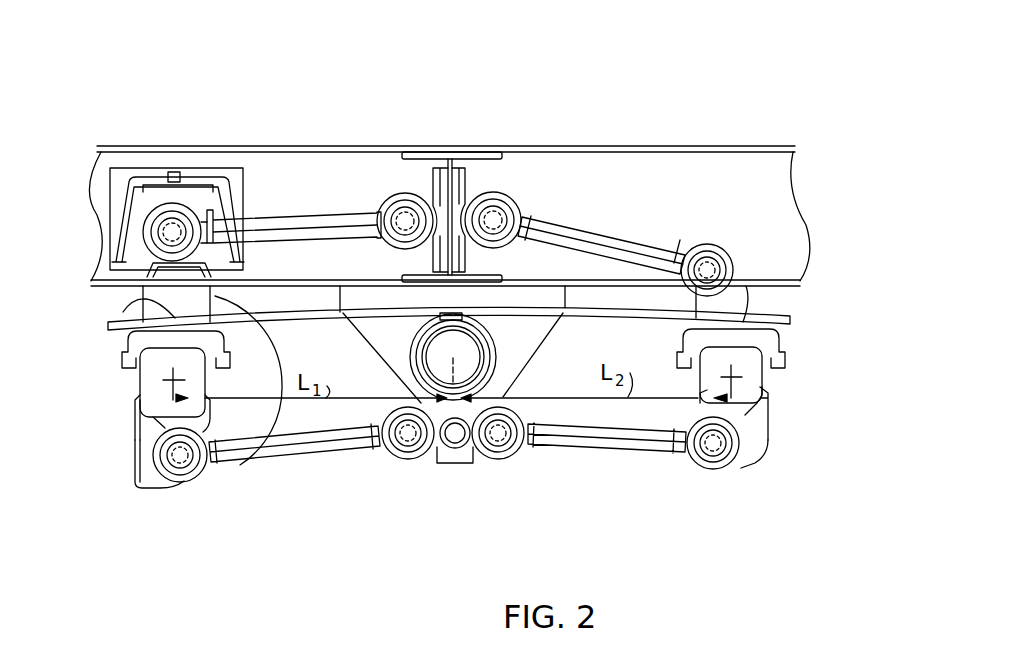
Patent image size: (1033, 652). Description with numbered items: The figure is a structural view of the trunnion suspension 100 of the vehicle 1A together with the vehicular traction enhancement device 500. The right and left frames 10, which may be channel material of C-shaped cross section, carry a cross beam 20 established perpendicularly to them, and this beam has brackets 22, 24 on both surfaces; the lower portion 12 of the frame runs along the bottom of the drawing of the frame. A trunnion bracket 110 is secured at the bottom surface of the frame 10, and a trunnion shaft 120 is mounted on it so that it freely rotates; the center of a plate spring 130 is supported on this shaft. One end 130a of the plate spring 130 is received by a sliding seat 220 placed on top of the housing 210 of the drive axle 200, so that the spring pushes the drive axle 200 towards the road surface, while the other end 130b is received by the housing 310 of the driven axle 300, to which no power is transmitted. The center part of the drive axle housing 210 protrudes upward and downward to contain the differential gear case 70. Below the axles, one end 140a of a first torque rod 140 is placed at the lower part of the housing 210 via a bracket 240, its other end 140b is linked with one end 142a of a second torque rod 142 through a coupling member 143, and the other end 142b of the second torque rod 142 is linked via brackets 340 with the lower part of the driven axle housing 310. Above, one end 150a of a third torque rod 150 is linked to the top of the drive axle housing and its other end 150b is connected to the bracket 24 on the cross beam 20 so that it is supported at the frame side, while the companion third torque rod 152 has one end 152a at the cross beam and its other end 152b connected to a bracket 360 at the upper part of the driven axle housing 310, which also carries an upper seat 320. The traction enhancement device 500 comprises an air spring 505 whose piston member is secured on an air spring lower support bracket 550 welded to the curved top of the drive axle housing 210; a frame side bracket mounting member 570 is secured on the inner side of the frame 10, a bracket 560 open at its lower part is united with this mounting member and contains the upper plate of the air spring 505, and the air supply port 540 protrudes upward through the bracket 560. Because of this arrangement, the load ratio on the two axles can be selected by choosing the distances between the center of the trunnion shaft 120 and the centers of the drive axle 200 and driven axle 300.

The vehicle 1A is at (665, 68).
The frame 10 is at (721, 184).
The frame lower flange 12 is at (602, 278).
The cross beam 20 is at (449, 168).
The bracket 22 is at (436, 202).
The bracket 24 is at (466, 195).
The differential gear case 70 is at (266, 348).
The trunnion suspension 100 is at (436, 543).
The trunnion bracket 110 is at (526, 336).
The trunnion shaft 120 is at (468, 366).
The plate spring 130 is at (613, 316).
The one end of plate spring 130a is at (140, 307).
The other end of plate spring 130b is at (748, 318).
The first torque rod 140 is at (317, 448).
The one end of first torque rod 140a is at (181, 458).
The other end of first torque rod 140b is at (408, 436).
The second torque rod 142 is at (593, 440).
The one end of second torque rod 142a is at (498, 437).
The other end of second torque rod 142b is at (713, 446).
The coupling member 143 is at (455, 437).
The third torque rod 150 is at (318, 222).
The one end of third torque rod 150a is at (178, 231).
The other end of third torque rod 150b is at (395, 207).
The third torque rod 152 is at (612, 247).
The second upper link inner pivot 152a is at (495, 220).
The other end of third torque rod 152b is at (708, 268).
The drive axle 200 is at (122, 392).
The housing 210 is at (190, 413).
The sliding seat 220 is at (126, 338).
The bracket 240 is at (163, 426).
The driven axle 300 is at (778, 412).
The housing 310 is at (764, 377).
The second spring cap 320 is at (781, 330).
The bracket 340 is at (748, 420).
The bracket 360 is at (728, 258).
The vehicular traction enhancement device 500 is at (198, 85).
The air spring 505 is at (163, 197).
The air supply port 540 is at (183, 180).
The air spring lower support bracket 550 is at (213, 293).
The bracket 560 is at (238, 166).
The frame side bracket mounting member 570 is at (120, 176).